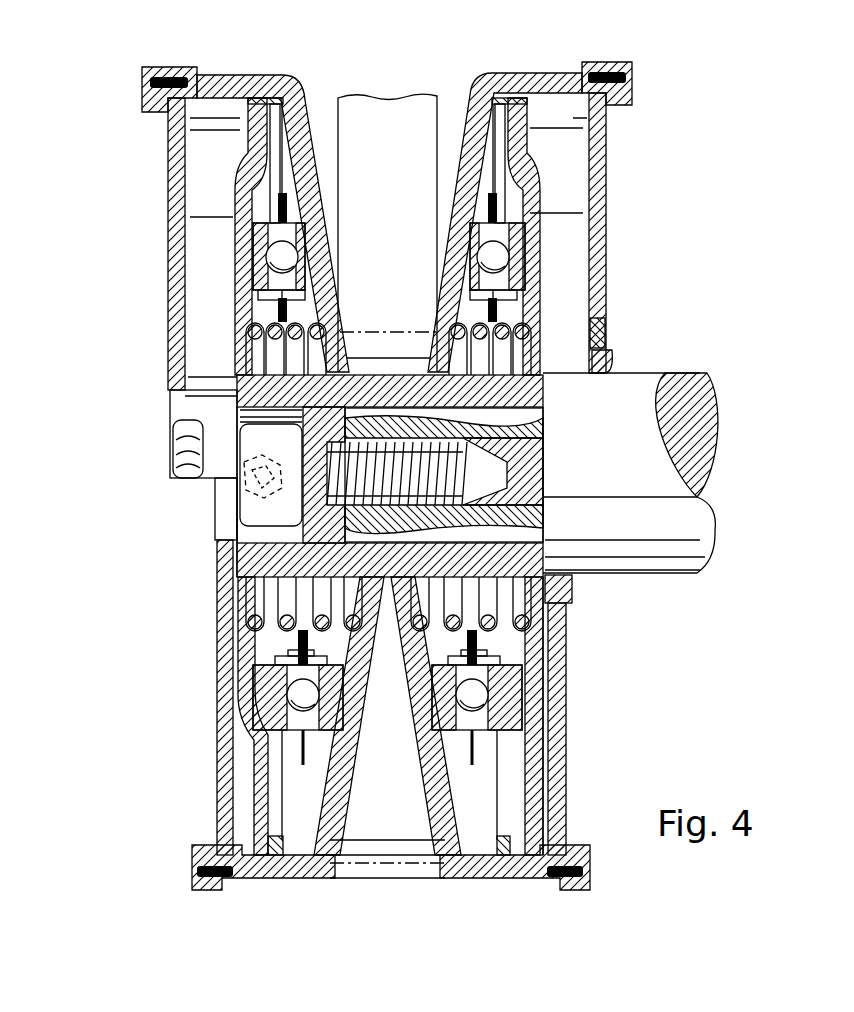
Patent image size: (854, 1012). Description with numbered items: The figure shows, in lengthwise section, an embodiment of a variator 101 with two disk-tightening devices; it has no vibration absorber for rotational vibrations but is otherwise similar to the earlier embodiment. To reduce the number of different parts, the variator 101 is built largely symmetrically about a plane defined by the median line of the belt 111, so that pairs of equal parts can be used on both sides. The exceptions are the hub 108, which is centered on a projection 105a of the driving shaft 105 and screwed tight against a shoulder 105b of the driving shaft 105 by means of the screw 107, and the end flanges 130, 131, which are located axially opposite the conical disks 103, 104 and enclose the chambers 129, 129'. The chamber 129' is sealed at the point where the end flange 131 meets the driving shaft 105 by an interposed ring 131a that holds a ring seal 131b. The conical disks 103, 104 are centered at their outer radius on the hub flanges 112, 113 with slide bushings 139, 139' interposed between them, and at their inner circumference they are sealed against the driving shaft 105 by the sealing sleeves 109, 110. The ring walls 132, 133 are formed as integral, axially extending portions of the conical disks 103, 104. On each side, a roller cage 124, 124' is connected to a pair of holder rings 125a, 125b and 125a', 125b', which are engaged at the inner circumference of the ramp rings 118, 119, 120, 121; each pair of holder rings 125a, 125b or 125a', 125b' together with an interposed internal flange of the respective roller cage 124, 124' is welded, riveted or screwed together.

The variator 101 is at (658, 165).
The conical disk 103 is at (298, 150).
The conical disk 104 is at (473, 168).
The driving shaft 105 is at (597, 553).
The projection of the driving shaft 105a is at (530, 372).
The shoulder of the driving shaft 105b is at (543, 410).
The screw 107 is at (253, 480).
The hub 108 is at (253, 570).
The sealing sleeve 109 is at (247, 398).
The sealing sleeve 110 is at (490, 535).
The belt 111 is at (422, 115).
The hub flange 112 is at (245, 325).
The hub flange 113 is at (540, 193).
The ramp ring 118 is at (263, 688).
The ramp ring 119 is at (505, 697).
The ramp ring 120 is at (307, 740).
The ramp ring 121 is at (440, 723).
The roller cage 124 is at (203, 752).
The roller cage 124' is at (563, 749).
The holder ring 125a is at (206, 643).
The holder ring 125a' is at (568, 665).
The holder ring 125b is at (215, 662).
The holder ring 125b' is at (559, 656).
The chamber 129 is at (151, 161).
The chamber 129' is at (607, 158).
The end flange 130 is at (178, 143).
The end flange 131 is at (600, 243).
The interposed ring 131a is at (597, 340).
The ring seal 131b is at (610, 370).
The ring wall 132 is at (190, 67).
The ring wall 133 is at (553, 80).
The slide bushing 139 is at (283, 196).
The slide bushing 139' is at (522, 192).